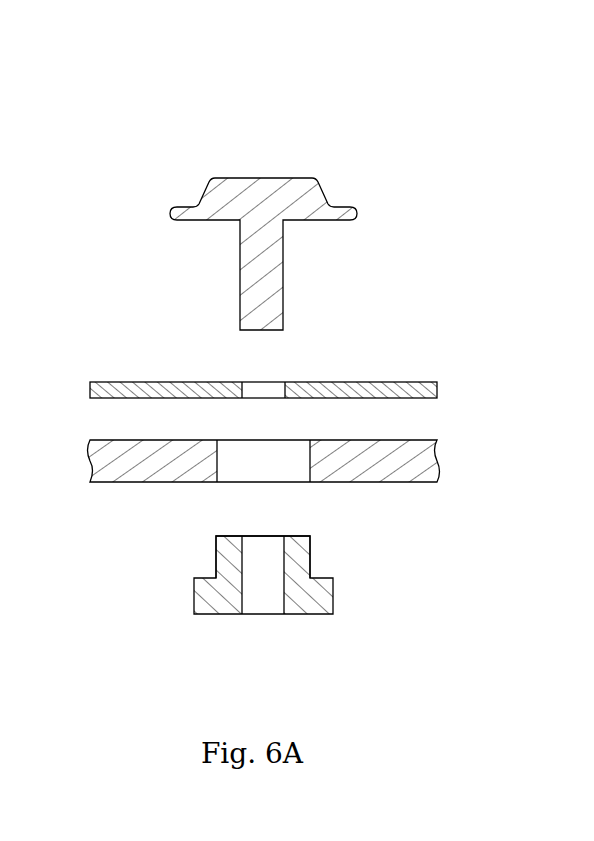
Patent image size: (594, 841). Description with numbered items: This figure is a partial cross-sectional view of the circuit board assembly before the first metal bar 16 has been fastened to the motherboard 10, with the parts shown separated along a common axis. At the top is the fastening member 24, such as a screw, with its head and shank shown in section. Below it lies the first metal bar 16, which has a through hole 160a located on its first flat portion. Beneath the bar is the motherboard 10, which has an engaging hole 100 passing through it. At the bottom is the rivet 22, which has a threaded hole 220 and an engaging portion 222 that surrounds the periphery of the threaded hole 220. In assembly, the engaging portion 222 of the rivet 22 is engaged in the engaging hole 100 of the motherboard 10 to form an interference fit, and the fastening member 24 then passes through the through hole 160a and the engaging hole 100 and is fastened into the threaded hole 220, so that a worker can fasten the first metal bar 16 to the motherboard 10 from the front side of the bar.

The fastening member 24 is at (285, 178).
The through hole 160a is at (255, 388).
The first metal bar 16 is at (437, 390).
The motherboard 10 is at (427, 461).
The engaging hole 100 is at (240, 467).
The engaging portion 222 is at (303, 558).
The rivet 22 is at (332, 602).
The threaded hole 220 is at (265, 605).